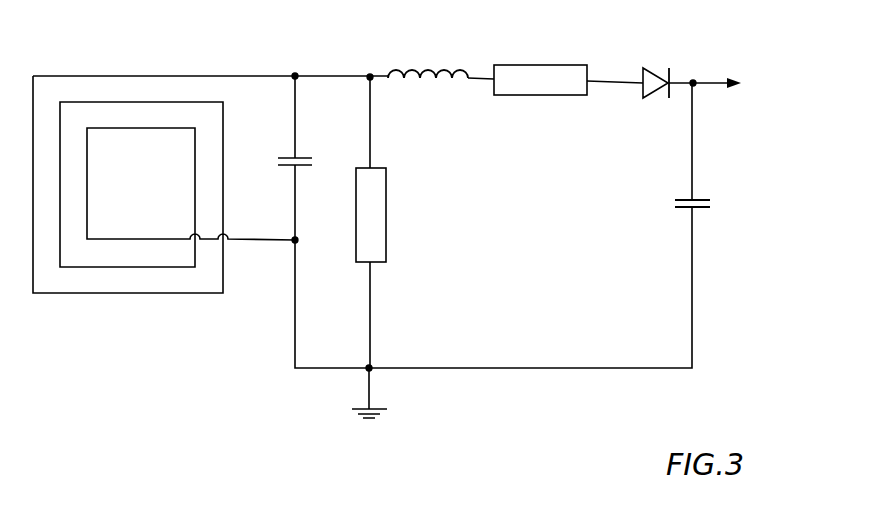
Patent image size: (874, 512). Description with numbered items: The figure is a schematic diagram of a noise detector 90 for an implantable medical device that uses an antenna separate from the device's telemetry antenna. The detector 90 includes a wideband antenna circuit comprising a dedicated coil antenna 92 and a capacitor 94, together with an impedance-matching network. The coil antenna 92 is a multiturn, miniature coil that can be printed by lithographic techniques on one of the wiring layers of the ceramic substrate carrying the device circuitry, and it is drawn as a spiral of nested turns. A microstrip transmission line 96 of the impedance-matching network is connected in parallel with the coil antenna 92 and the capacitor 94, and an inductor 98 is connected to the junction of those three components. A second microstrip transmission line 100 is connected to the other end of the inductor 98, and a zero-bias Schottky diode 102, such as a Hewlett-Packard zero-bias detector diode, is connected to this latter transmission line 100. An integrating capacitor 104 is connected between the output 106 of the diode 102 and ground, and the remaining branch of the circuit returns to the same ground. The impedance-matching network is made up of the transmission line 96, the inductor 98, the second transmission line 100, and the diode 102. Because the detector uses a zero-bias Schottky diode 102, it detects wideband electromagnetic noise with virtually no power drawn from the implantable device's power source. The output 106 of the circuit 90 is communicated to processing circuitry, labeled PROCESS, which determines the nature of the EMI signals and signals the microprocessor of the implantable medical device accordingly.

The noise detector 90 is at (168, 379).
The dedicated coil antenna 92 is at (113, 293).
The capacitor 94 is at (303, 157).
The microstrip transmission line 96 is at (387, 203).
The inductor 98 is at (422, 72).
The second microstrip transmission line 100 is at (555, 65).
The zero-bias Schottky diode 102 is at (658, 72).
The integrating capacitor 104 is at (700, 210).
The output 106 is at (720, 82).